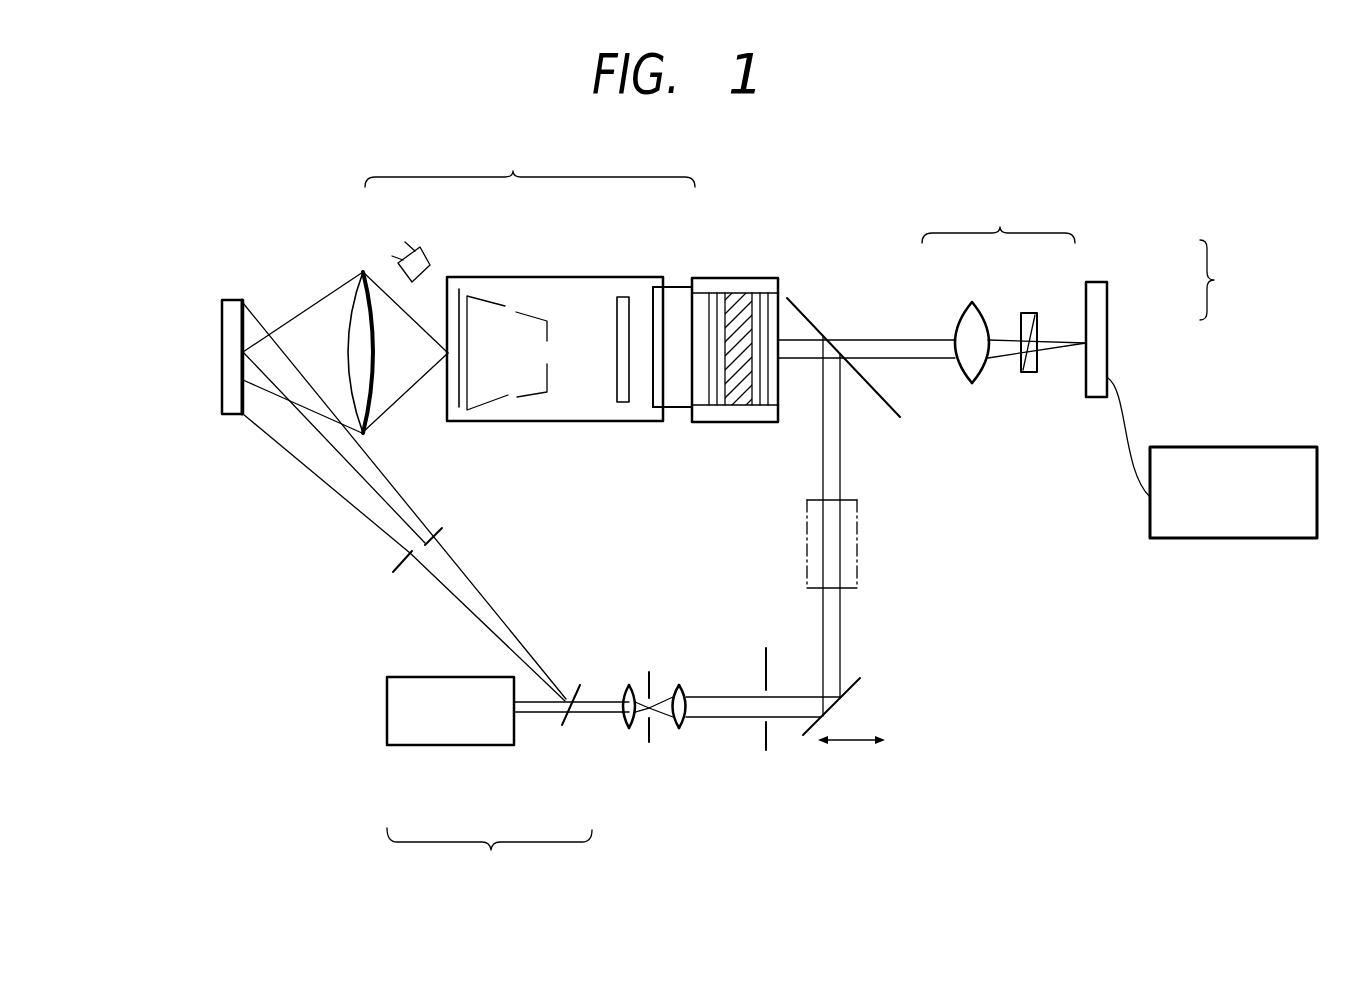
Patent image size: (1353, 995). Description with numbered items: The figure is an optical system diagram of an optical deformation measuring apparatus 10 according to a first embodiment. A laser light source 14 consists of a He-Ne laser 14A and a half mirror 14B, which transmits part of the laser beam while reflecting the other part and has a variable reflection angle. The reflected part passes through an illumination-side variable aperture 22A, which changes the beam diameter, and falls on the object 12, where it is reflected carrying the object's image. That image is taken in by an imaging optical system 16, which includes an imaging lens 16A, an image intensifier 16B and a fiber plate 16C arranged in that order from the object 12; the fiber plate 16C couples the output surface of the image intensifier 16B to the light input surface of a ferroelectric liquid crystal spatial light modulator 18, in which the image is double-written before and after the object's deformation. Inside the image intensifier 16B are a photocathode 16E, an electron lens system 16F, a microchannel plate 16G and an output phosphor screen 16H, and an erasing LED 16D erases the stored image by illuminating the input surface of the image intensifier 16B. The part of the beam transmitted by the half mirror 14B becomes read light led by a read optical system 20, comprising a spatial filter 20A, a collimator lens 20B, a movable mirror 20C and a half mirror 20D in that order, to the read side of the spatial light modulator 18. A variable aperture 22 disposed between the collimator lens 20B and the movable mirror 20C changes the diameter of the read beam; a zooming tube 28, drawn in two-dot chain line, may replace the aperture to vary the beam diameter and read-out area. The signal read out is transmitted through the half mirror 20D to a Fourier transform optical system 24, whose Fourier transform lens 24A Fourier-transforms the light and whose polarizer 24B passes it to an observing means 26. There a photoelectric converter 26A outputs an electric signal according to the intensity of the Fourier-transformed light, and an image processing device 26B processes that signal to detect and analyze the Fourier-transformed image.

The measuring apparatus 10 is at (1061, 783).
The object 12 is at (222, 414).
The laser light source 14 is at (489, 856).
The He-Ne laser 14A is at (413, 677).
The half mirror 14B is at (562, 725).
The imaging optical system 16 is at (530, 162).
The imaging lens 16A is at (363, 272).
The image intensifier 16B is at (583, 432).
The fiber plate 16C is at (678, 287).
The erasing LED 16D is at (430, 264).
The photocathode 16E is at (458, 408).
The electron lens system 16F is at (500, 410).
The microchannel plate 16G is at (623, 297).
The output phosphor screen 16H is at (658, 407).
The ferroelectric liquid crystal spatial light modulator 18 is at (751, 260).
The read optical system 20 is at (872, 652).
The spatial filter 20A is at (650, 732).
The collimator lens 20B is at (682, 723).
The movable mirror 20C is at (860, 683).
The half mirror 20D is at (884, 404).
The variable aperture 22 is at (763, 668).
The illumination-side variable aperture 22A is at (398, 564).
The Fourier transform optical system 24 is at (998, 221).
The Fourier transform lens 24A is at (970, 302).
The polarizer 24B is at (1029, 313).
The observing means 26 is at (1223, 280).
The photoelectric converter 26A is at (1108, 290).
The image processing device 26B is at (1193, 447).
The zooming tube 28 is at (857, 552).